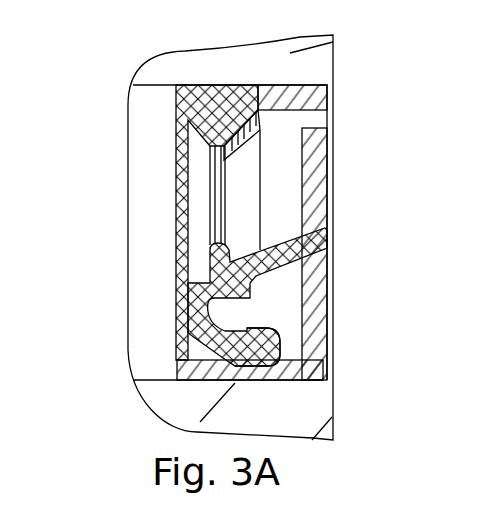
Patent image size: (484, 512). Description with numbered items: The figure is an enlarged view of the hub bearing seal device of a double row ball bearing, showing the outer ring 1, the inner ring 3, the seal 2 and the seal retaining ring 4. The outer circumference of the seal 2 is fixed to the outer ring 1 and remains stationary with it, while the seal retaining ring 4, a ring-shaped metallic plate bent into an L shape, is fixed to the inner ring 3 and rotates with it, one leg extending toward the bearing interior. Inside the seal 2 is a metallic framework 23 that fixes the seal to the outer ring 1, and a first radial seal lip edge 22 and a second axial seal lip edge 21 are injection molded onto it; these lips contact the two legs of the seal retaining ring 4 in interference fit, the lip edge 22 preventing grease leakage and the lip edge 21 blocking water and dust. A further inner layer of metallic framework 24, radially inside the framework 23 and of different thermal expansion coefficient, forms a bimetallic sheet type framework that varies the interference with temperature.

The outer ring 1 is at (333, 42).
The seal 2 is at (230, 196).
The inner ring 3 is at (272, 413).
The seal retaining ring 4 is at (315, 204).
The second axial seal lip edge 21 is at (288, 240).
The first radial seal lip edge 22 is at (262, 333).
The metallic framework 23 is at (250, 93).
The inner layer of metallic framework 24 is at (263, 133).